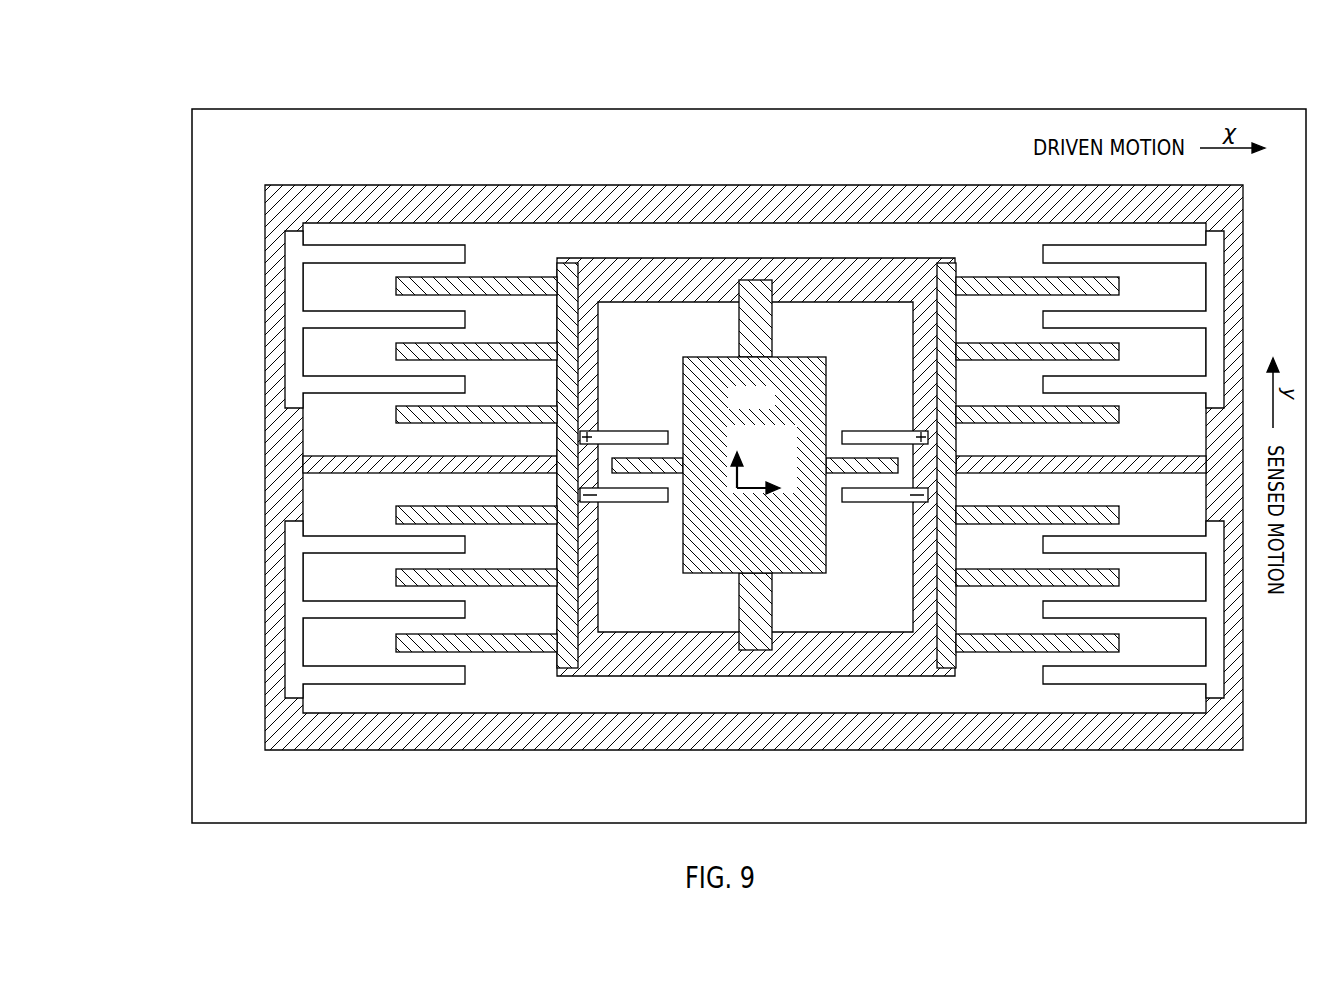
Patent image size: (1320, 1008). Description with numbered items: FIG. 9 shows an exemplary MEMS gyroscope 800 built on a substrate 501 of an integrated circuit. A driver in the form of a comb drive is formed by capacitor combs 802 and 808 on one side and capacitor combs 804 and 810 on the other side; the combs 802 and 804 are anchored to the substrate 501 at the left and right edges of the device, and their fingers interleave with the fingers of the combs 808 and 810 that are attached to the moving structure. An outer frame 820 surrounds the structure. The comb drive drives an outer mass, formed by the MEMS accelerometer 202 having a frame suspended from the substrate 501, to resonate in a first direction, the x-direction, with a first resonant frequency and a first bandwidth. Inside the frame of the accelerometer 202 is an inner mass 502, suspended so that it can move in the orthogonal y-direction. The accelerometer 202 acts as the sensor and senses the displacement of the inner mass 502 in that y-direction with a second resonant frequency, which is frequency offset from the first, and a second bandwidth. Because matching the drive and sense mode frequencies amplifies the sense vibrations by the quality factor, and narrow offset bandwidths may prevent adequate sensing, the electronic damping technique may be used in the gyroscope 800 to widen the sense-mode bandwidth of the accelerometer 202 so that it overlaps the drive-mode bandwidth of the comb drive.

The MEMS gyroscope 800 is at (700, 432).
The substrate 501 is at (749, 466).
The outer drive frame 820 is at (558, 185).
The capacitor comb 802 is at (290, 292).
The capacitor comb 804 is at (1213, 293).
The capacitor comb 808 is at (497, 277).
The capacitor comb 810 is at (987, 277).
The MEMS accelerometer 202 is at (778, 258).
The mass 502 is at (754, 465).